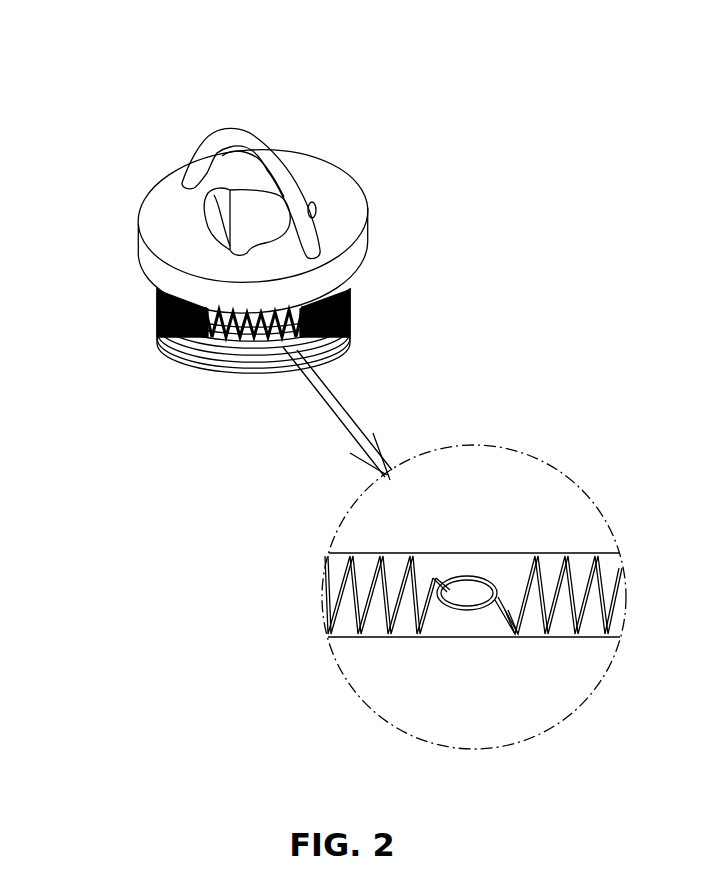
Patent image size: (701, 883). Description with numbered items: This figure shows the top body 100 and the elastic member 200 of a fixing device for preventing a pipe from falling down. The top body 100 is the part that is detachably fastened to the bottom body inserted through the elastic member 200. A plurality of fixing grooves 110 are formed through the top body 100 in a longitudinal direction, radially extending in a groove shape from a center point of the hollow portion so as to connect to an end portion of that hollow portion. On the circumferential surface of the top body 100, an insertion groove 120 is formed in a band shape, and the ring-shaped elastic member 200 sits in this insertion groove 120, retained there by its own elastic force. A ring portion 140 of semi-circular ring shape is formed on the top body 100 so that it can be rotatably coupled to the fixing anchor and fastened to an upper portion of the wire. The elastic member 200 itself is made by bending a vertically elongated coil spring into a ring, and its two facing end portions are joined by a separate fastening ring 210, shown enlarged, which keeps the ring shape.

The top body 100 is at (251, 235).
The fixing groove 110 is at (220, 242).
The insertion groove 120 is at (250, 378).
The ring portion 140 is at (252, 137).
The elastic member 200 is at (317, 334).
The fastening ring 210 is at (462, 611).